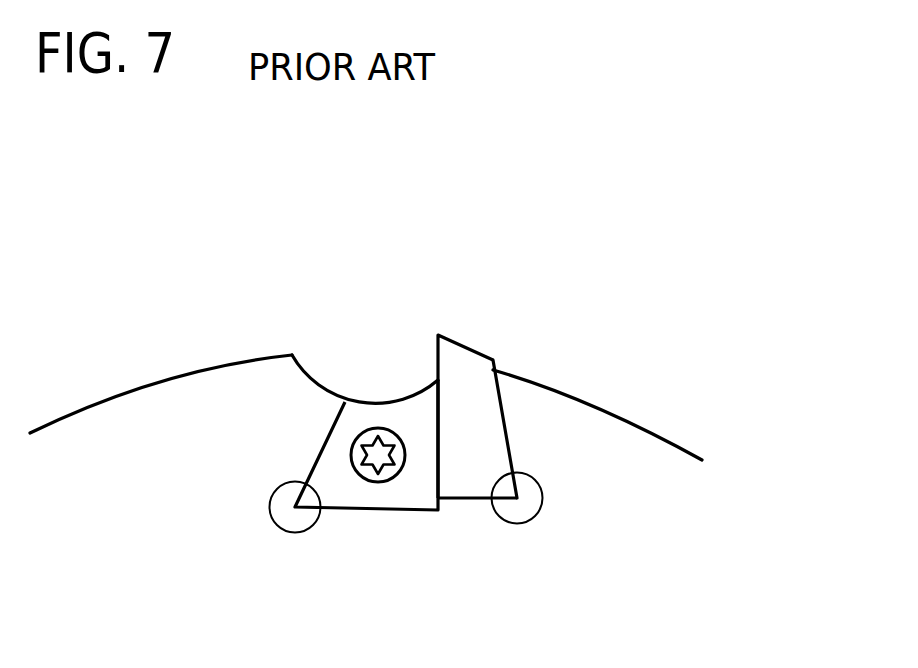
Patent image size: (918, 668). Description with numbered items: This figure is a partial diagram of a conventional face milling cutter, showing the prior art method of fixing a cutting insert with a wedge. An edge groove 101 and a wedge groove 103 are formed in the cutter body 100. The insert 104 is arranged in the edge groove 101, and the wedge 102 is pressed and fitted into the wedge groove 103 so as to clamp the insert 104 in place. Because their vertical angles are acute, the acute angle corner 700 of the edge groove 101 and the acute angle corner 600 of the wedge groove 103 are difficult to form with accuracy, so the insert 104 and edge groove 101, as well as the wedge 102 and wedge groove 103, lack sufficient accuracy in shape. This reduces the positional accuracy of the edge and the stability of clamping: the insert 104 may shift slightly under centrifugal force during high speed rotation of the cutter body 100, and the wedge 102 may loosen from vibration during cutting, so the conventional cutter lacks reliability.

The cutter body 100 is at (650, 445).
The edge groove 101 is at (500, 415).
The wedge 102 is at (378, 417).
The wedge groove 103 is at (338, 449).
The insert 104 is at (465, 363).
The acute angle corner of wedge groove 600 is at (278, 530).
The acute angle corner of edge groove 700 is at (530, 522).